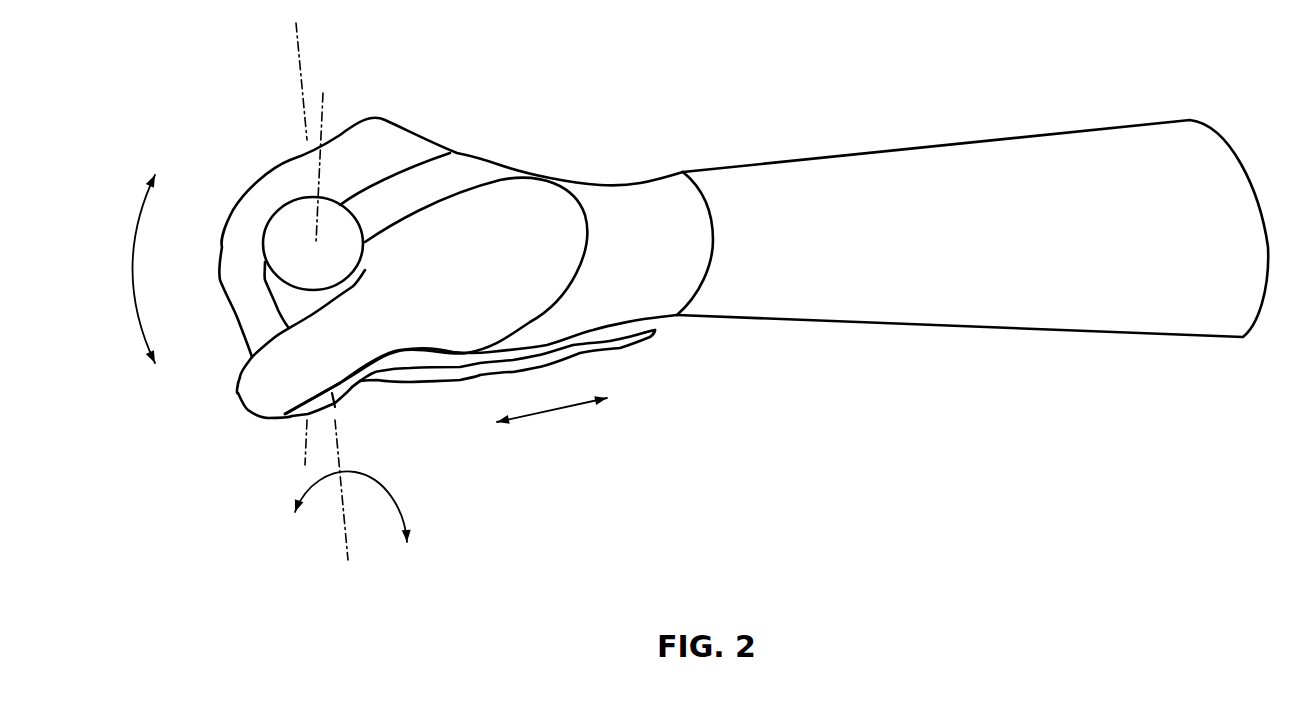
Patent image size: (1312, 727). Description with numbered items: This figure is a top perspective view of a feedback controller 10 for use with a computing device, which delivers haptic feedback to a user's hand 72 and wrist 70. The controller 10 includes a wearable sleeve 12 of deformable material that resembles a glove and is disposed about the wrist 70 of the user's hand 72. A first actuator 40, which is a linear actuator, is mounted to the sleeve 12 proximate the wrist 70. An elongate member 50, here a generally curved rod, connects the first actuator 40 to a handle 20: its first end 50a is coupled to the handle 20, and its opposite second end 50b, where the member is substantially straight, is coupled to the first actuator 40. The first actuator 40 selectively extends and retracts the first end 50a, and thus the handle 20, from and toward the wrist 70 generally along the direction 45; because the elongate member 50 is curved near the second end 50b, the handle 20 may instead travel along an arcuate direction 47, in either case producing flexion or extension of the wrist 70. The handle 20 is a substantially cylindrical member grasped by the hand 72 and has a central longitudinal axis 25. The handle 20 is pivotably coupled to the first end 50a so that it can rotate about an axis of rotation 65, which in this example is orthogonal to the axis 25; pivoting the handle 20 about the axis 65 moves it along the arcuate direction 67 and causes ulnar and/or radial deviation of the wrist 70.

The feedback controller 10 is at (557, 112).
The sleeve 12 is at (683, 172).
The handle 20 is at (290, 228).
The longitudinal axis 25 is at (323, 95).
The first actuator 40 is at (648, 336).
The direction 45 is at (547, 411).
The arcuate direction 47 is at (130, 259).
The elongate member 50 is at (458, 382).
The first end 50a is at (357, 395).
The second end 50b is at (617, 360).
The axis of rotation 65 is at (297, 31).
The arcuate direction 67 is at (405, 503).
The wrist 70 is at (600, 160).
The hand 72 is at (478, 142).